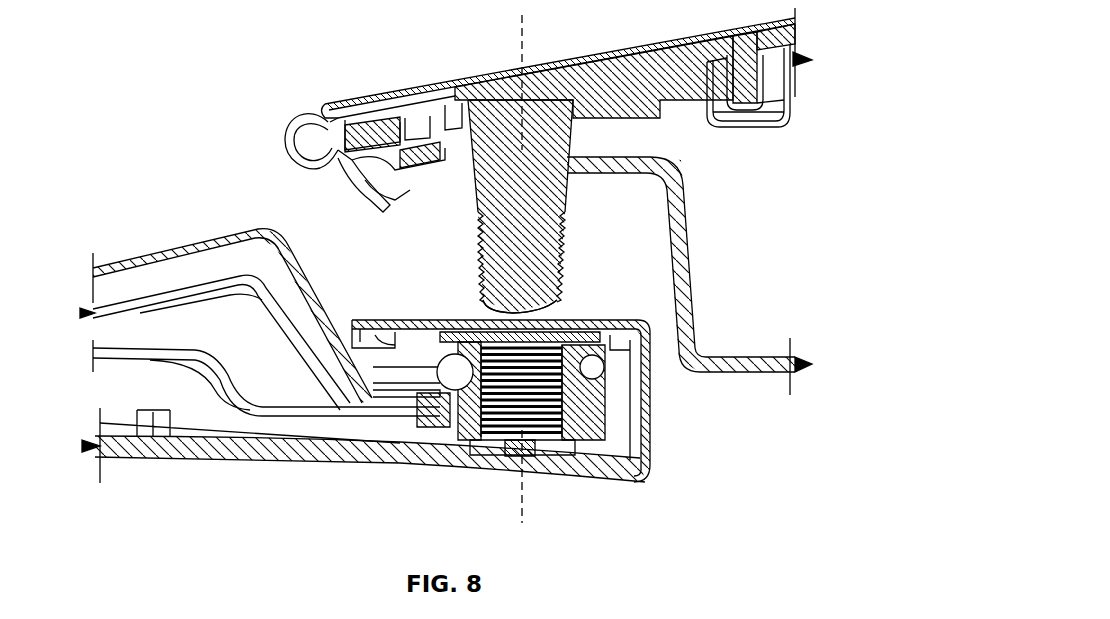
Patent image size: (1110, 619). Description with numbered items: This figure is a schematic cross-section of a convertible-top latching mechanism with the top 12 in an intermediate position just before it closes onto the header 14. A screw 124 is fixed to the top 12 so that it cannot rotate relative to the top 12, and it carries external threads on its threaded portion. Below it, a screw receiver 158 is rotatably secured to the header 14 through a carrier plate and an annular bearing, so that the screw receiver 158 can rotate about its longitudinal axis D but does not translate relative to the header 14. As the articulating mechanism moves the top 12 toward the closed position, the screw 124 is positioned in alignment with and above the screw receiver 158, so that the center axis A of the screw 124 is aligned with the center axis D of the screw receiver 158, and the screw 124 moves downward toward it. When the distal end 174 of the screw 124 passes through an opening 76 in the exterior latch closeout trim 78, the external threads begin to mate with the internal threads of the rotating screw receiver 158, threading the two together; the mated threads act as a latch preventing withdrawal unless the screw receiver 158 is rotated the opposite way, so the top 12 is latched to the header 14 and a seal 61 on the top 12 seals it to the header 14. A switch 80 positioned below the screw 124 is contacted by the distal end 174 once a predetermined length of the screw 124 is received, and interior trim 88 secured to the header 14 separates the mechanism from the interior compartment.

The convertible top 12 is at (690, 245).
The header 14 is at (212, 242).
The seal 61 is at (289, 120).
The screw 124 is at (473, 218).
The distal end 174 is at (556, 305).
The exterior latch closeout trim 78 is at (413, 322).
The opening 76 is at (453, 320).
The screw receiver 158 is at (452, 462).
The switch 80 is at (505, 470).
The interior trim 88 is at (373, 468).
The center axis A is at (520, 40).
The longitudinal axis D is at (530, 480).